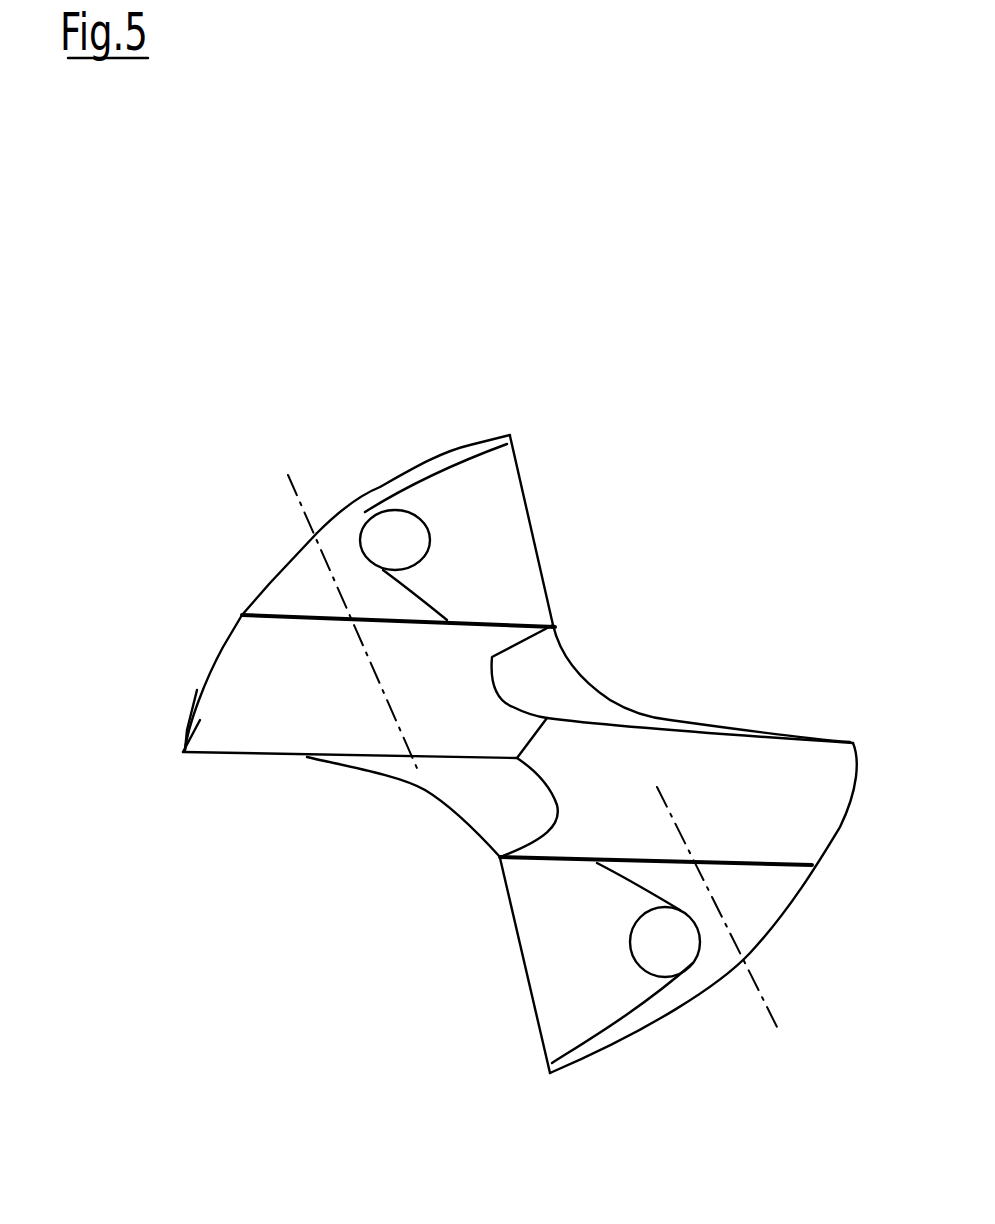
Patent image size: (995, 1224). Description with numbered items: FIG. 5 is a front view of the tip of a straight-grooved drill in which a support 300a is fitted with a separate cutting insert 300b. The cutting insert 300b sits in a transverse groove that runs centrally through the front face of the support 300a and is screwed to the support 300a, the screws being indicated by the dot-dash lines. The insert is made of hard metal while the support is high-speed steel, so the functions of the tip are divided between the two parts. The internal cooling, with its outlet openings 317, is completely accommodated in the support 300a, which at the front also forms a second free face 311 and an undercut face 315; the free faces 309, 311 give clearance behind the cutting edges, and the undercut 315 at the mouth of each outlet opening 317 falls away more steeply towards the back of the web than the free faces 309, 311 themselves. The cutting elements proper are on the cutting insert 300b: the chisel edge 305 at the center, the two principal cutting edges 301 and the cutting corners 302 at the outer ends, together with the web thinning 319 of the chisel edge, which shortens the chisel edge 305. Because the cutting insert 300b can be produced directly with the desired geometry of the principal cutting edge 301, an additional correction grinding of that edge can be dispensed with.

The support 300a is at (302, 533).
The cutting insert 300b is at (200, 668).
The principal cutting edge 301 is at (417, 763).
The cutting corner 302 is at (182, 753).
The chisel edge 305 is at (537, 740).
The free face 309 is at (758, 802).
The second free face 311 is at (757, 900).
The undercut face 315 is at (490, 490).
The outlet opening 317 is at (395, 535).
The web thinning 319 is at (548, 683).